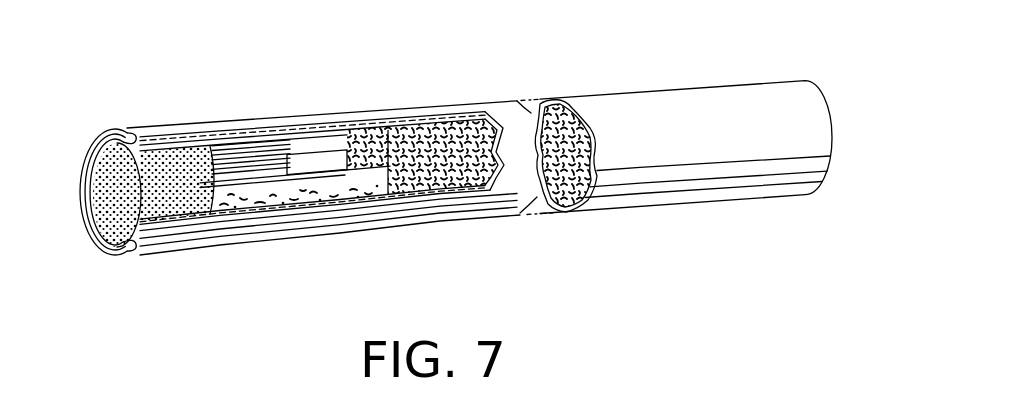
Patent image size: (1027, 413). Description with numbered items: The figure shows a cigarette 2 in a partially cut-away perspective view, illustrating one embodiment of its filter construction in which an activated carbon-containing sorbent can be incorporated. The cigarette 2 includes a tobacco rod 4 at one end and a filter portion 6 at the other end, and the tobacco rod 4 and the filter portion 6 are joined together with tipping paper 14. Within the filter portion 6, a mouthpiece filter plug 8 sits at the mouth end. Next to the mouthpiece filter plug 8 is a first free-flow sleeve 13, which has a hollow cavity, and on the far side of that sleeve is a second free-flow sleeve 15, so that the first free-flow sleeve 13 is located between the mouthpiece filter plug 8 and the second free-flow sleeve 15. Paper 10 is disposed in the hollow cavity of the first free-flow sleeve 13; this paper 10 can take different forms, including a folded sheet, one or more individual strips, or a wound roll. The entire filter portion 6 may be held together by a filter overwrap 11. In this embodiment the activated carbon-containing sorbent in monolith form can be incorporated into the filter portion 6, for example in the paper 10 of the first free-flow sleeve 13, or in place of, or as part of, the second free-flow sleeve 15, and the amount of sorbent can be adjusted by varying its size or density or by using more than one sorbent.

The cigarette 2 is at (330, 98).
The tobacco rod 4 is at (690, 98).
The filter portion 6 is at (197, 118).
The mouthpiece filter plug 8 is at (93, 143).
The paper 10 is at (234, 172).
The filter overwrap 11 is at (100, 250).
The first free-flow sleeve 13 is at (268, 205).
The tipping paper 14 is at (427, 112).
The second free-flow sleeve 15 is at (372, 205).